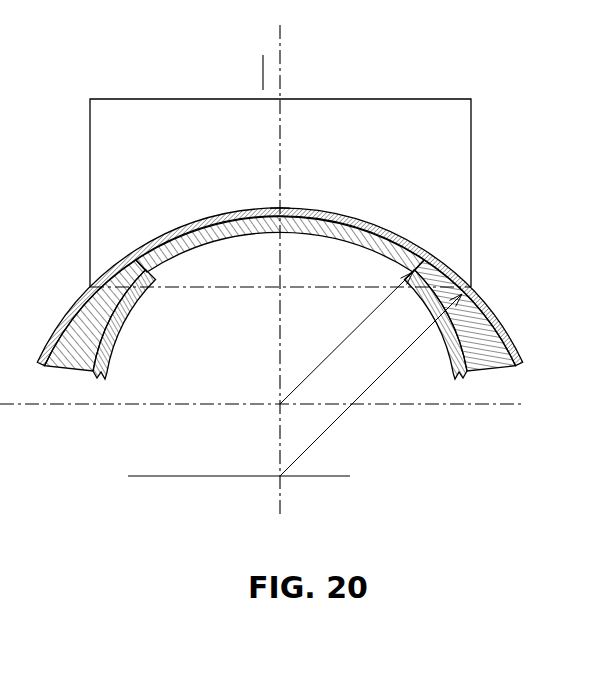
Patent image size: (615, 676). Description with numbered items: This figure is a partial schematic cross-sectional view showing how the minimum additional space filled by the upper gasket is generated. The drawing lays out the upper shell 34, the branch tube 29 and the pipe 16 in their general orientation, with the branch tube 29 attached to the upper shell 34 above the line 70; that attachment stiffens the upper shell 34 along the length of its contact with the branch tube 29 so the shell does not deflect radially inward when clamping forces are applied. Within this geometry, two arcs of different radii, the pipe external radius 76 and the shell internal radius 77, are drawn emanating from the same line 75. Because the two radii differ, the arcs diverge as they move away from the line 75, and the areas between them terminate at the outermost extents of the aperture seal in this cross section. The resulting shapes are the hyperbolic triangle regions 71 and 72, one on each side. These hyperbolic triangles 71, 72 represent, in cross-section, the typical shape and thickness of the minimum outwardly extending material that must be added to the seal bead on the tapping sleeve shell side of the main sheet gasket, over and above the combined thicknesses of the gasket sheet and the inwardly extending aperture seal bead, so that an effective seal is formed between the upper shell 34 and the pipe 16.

The pipe 16 is at (140, 305).
The branch tube 29 is at (472, 173).
The upper shell 34 is at (493, 302).
The line 70 is at (156, 282).
The hyperbolic triangle region 71 is at (86, 332).
The hyperbolic triangle region 72 is at (485, 348).
The line 75 is at (282, 213).
The pipe external radius 76 is at (330, 360).
The shell internal radius 77 is at (403, 357).